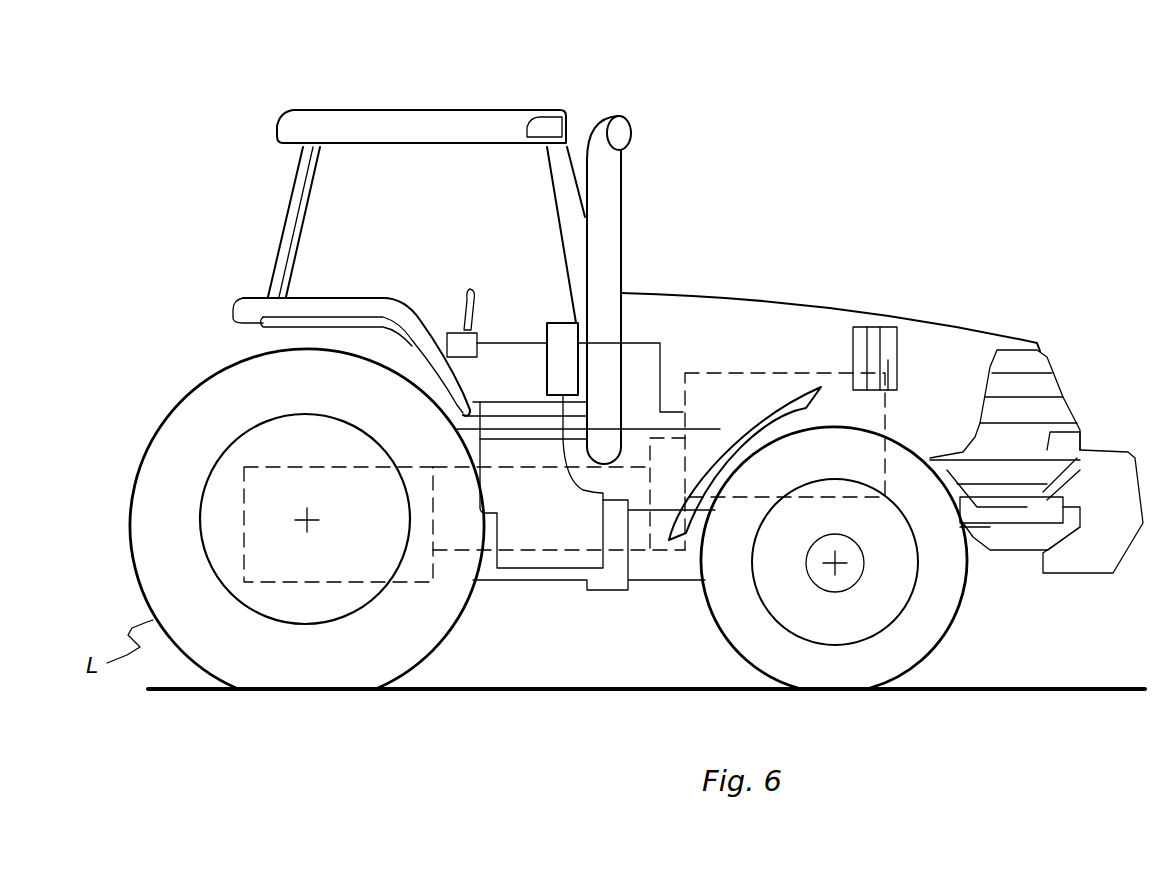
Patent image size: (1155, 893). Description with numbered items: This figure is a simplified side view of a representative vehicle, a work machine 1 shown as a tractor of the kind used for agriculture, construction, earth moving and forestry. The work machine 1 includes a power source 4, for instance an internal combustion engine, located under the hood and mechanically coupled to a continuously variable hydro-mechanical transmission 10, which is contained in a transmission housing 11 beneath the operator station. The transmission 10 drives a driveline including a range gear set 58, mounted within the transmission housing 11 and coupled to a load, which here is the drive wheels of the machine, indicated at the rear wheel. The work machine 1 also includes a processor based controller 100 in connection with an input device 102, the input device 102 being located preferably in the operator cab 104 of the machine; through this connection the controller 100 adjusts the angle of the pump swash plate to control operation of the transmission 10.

The work machine 1 is at (960, 214).
The power source 4 is at (773, 373).
The transmission 10 is at (553, 553).
The transmission housing 11 is at (640, 550).
The range gear set 58 is at (328, 565).
The processor based controller 100 is at (556, 323).
The input device 102 is at (462, 290).
The operator cab 104 is at (441, 108).